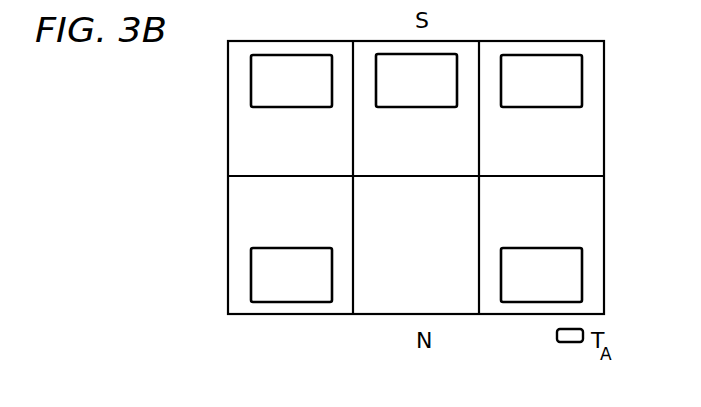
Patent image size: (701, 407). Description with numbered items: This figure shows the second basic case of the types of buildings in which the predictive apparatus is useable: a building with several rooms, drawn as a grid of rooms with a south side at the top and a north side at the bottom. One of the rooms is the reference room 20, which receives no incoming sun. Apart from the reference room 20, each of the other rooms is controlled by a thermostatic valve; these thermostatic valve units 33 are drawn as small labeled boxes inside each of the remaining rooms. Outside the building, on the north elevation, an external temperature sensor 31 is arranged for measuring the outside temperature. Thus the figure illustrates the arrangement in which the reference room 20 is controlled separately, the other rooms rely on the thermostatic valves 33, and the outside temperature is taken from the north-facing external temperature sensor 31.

The reference room 20 is at (428, 258).
The THV thermal heating/ventilation unit 33 is at (290, 54).
The ambient temperature sensor 31 is at (567, 343).